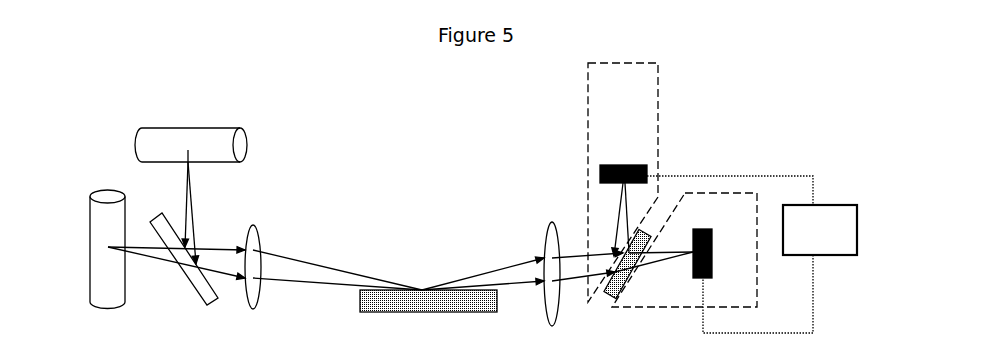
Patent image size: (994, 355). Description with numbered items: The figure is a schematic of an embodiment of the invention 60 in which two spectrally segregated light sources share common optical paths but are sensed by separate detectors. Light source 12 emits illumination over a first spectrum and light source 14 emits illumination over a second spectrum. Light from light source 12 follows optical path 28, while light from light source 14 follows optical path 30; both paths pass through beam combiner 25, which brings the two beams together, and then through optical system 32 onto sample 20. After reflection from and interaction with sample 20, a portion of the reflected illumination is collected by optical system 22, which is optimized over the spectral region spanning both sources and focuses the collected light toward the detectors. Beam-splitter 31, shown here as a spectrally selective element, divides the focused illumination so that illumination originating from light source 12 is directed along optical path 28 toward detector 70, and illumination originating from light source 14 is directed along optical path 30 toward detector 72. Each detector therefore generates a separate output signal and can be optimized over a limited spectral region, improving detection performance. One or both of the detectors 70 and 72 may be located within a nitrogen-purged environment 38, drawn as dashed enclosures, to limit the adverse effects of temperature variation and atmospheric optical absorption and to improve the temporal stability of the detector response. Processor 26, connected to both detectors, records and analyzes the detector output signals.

The light source 12 is at (191, 131).
The light source 14 is at (107, 266).
The sample 20 is at (428, 313).
The optical system 22 is at (552, 260).
The beam combiner 25 is at (186, 271).
The processor 26 is at (828, 242).
The optical path 28 is at (400, 220).
The optical path 30 is at (400, 277).
The beam-splitter 31 is at (621, 281).
The optical system 32 is at (256, 283).
The purged environment 38 is at (633, 98).
The embodiment of the invention 60 is at (500, 95).
The detector 70 is at (623, 164).
The detector 72 is at (717, 253).